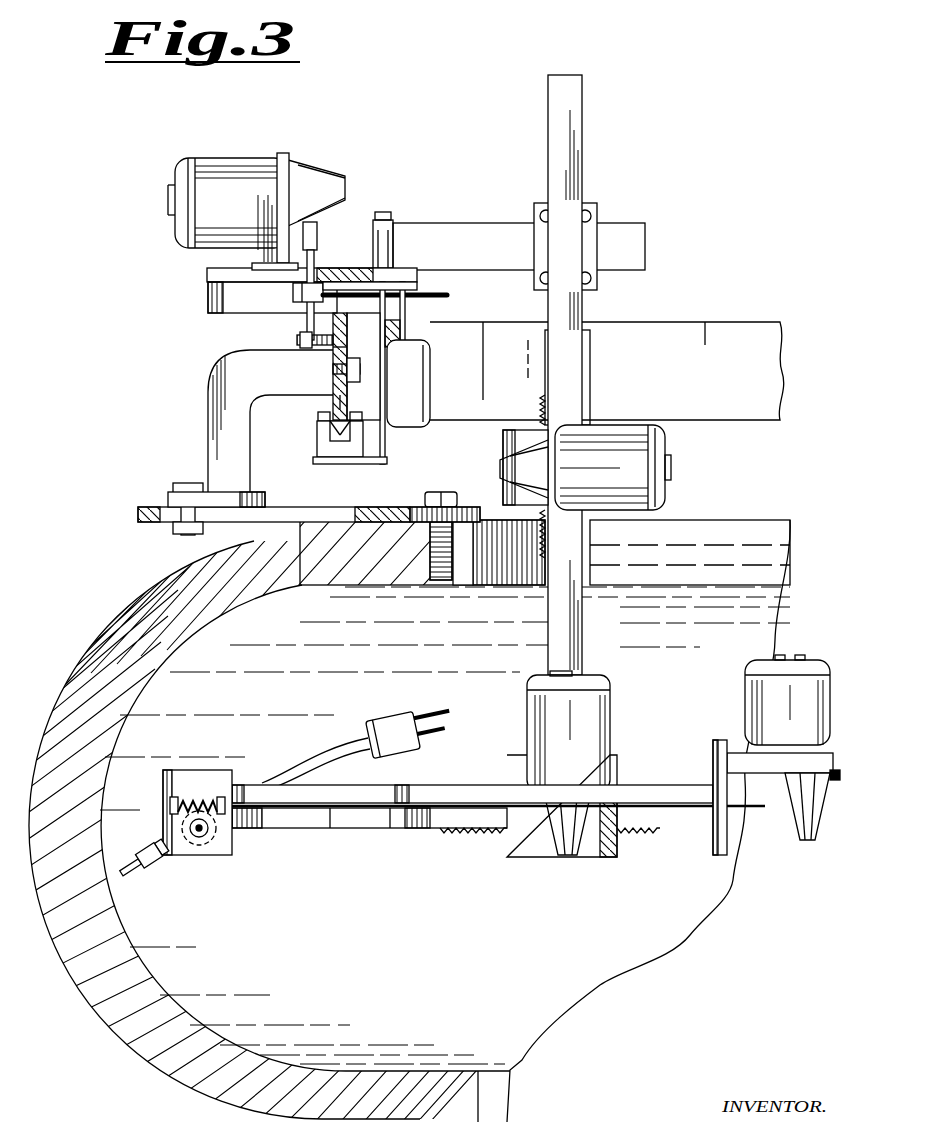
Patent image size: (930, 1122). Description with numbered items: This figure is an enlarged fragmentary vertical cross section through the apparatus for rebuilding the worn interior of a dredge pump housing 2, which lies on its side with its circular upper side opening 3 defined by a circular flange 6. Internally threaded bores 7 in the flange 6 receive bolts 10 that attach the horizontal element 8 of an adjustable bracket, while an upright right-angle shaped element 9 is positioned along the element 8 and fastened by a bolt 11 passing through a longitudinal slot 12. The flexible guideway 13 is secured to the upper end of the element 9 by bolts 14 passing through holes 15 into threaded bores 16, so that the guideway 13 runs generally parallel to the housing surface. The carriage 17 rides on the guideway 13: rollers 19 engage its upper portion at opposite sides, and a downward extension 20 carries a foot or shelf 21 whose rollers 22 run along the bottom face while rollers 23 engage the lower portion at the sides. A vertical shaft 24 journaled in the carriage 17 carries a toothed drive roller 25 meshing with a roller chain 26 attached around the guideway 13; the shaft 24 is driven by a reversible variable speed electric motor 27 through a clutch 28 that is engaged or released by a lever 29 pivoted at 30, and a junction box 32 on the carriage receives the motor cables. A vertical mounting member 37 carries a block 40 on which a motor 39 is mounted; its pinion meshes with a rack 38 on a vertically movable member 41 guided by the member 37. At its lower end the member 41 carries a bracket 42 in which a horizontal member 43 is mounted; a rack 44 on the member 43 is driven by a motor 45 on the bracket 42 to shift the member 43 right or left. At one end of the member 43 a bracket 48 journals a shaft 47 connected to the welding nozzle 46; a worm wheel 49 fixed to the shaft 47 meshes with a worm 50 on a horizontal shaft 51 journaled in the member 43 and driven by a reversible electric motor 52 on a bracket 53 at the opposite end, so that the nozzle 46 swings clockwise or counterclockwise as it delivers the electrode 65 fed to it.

The dredge pump housing 2 is at (88, 652).
The upper side opening 3 is at (478, 565).
The circular flange 6 is at (464, 520).
The internally threaded bores 7 is at (443, 580).
The horizontal element 8 is at (148, 523).
The upright right-angle shaped element 9 is at (212, 382).
The bolt 10 is at (440, 492).
The bolt 11 is at (186, 483).
The longitudinal slot 12 is at (258, 522).
The flexible guideway 13 is at (666, 322).
The bolts 14 is at (354, 374).
The holes 15 is at (333, 398).
The threaded bores 16 is at (333, 373).
The carriage 17 is at (212, 274).
The rollers 19 is at (350, 318).
The downward extension 20 is at (387, 332).
The foot or shelf 21 is at (353, 464).
The rollers 22 is at (335, 434).
The rollers 23 is at (323, 421).
The vertical shaft 24 is at (307, 322).
The toothed drive roller 25 is at (297, 340).
The roller chain 26 is at (332, 349).
The reversible variable speed electric motor 27 is at (240, 162).
The clutch 28 is at (293, 295).
The lever 29 is at (448, 296).
The pivot 30 is at (337, 278).
The junction box 32 is at (430, 378).
The vertical mounting member 37 is at (583, 110).
The rack 38 is at (541, 412).
The reversible variable speed electric motor 39 is at (668, 447).
The block 40 is at (515, 436).
The vertically moveable member 41 is at (583, 622).
The bracket 42 is at (618, 780).
The horizontal member 43 is at (386, 830).
The rack 44 is at (456, 836).
The reversible variable speed electric motor 45 is at (527, 732).
The welding nozzle 46 is at (143, 866).
The shaft 47 is at (203, 834).
The bracket 48 is at (232, 845).
The worm wheel 49 is at (193, 845).
The worm 50 is at (198, 797).
The horizontal shaft 51 is at (332, 812).
The reversible electric motor 52 is at (832, 712).
The bracket 53 is at (838, 774).
The electrode 65 is at (123, 867).